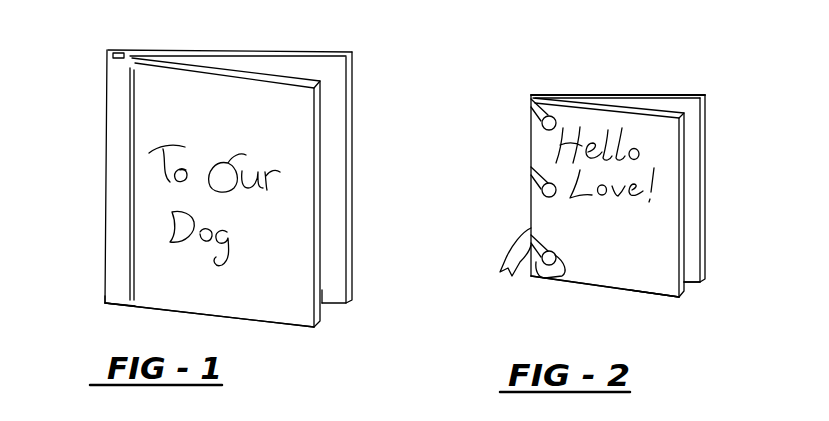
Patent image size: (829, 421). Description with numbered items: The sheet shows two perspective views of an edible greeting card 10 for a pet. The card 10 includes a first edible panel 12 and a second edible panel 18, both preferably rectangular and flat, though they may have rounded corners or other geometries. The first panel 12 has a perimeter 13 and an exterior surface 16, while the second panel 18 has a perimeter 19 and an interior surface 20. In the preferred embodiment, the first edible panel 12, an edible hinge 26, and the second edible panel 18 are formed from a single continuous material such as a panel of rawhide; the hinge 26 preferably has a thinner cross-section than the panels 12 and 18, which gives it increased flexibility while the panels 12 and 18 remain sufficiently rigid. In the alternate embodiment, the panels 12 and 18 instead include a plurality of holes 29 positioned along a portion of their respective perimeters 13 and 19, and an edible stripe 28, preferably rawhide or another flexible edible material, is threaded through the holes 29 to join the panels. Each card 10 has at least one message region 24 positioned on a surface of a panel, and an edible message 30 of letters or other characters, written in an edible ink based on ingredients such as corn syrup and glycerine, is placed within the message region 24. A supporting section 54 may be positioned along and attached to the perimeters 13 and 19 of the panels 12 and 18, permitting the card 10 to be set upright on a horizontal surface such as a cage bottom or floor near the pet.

In FIG. 1, the greeting card 10 is at (368, 80).
In FIG. 1, the first edible panel 12 is at (287, 295).
In FIG. 2, the first edible panel 12 is at (668, 160).
In FIG. 1, the perimeter 13 is at (262, 322).
In FIG. 2, the perimeter 13 is at (583, 285).
In FIG. 1, the exterior surface 16 is at (263, 128).
In FIG. 1, the second edible panel 18 is at (340, 125).
In FIG. 2, the second edible panel 18 is at (693, 108).
In FIG. 1, the perimeter 19 is at (280, 50).
In FIG. 2, the perimeter 19 is at (657, 92).
In FIG. 1, the interior surface 20 is at (333, 187).
In FIG. 1, the message region 24 is at (172, 199).
In FIG. 1, the edible hinge 26 is at (115, 101).
In FIG. 2, the edible stripe 28 is at (553, 93).
In FIG. 2, the holes 29 is at (558, 280).
In FIG. 1, the edible message 30 is at (165, 168).
In FIG. 1, the supporting section 54 is at (147, 308).
In FIG. 2, the supporting section 54 is at (642, 295).